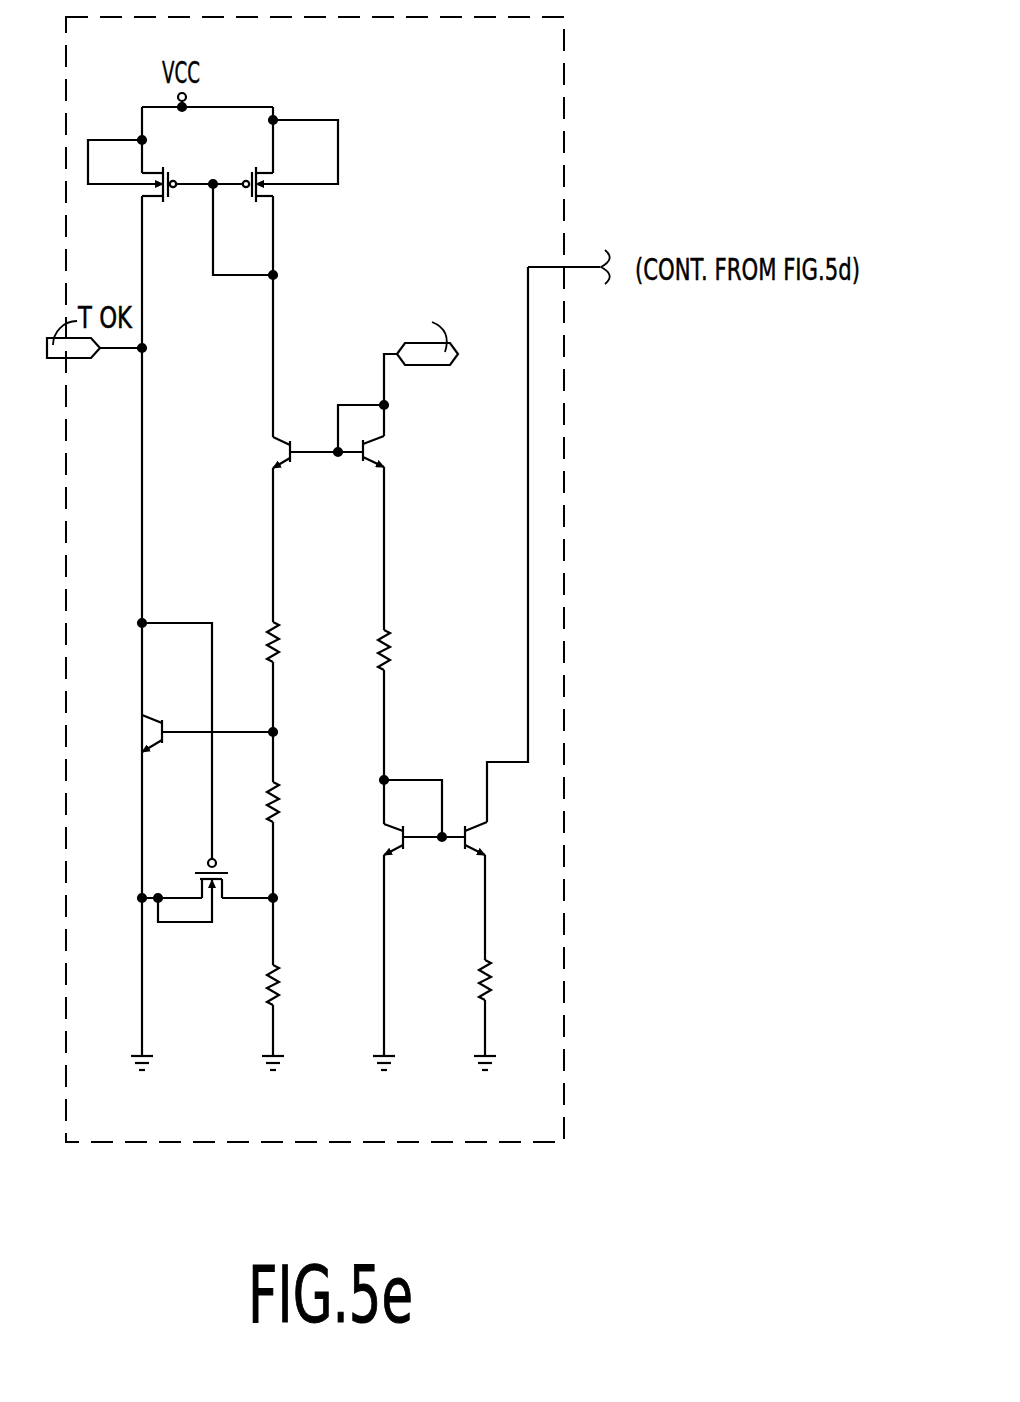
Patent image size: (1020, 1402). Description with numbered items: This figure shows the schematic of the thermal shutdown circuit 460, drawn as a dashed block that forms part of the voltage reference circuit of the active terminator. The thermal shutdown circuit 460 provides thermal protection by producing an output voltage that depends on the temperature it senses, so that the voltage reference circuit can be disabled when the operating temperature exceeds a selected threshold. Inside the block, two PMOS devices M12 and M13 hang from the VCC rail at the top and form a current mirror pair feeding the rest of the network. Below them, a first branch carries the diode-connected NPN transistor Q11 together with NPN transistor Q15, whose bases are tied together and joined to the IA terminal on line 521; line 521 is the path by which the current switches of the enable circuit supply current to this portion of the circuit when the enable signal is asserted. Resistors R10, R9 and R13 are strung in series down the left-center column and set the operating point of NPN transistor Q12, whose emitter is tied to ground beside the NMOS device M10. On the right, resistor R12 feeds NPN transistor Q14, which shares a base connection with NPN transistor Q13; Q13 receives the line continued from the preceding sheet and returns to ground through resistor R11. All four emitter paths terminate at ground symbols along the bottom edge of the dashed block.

The thermal shutdown circuit 460 is at (452, 1127).
The line 521 is at (427, 365).
The PMOS transistor M12 is at (165, 190).
The PMOS transistor M13 is at (275, 193).
The NMOS transistor M10 is at (205, 814).
The NPN transistor Q11 is at (330, 436).
The NPN transistor Q12 is at (205, 705).
The NPN transistor Q13 is at (505, 841).
The NPN transistor Q14 is at (424, 835).
The NPN transistor Q15 is at (398, 447).
The resistor R9 is at (306, 823).
The resistor R10 is at (306, 652).
The resistor R11 is at (516, 985).
The resistor R12 is at (417, 661).
The resistor R13 is at (308, 987).